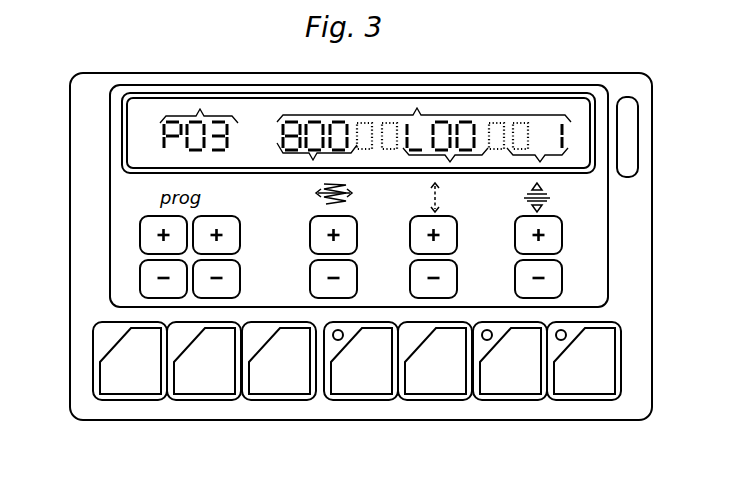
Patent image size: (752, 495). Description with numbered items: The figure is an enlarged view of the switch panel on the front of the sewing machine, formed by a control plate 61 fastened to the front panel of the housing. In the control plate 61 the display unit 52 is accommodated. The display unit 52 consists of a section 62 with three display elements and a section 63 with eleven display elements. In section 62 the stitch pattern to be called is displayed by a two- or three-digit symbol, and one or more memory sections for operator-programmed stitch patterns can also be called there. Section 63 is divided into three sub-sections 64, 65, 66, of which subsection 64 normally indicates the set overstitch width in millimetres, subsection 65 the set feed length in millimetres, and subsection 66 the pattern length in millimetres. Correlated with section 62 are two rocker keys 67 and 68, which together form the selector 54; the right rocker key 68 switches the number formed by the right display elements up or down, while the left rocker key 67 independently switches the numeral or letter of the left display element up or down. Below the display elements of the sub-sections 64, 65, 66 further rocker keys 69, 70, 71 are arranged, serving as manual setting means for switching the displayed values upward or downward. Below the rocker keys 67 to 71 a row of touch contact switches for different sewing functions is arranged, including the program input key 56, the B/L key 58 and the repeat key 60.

The display unit 52 is at (553, 108).
The selector 54 is at (122, 272).
The program input key 56 is at (142, 382).
The B/L key 58 is at (213, 377).
The repeat key 60 is at (287, 378).
The control plate 61 is at (633, 242).
The section with three display elements 62 is at (200, 109).
The section with eleven display elements 63 is at (434, 126).
The subsection 64 is at (313, 160).
The subsection 65 is at (450, 162).
The subsection 66 is at (540, 162).
The rocker key 67 is at (140, 233).
The rocker key 68 is at (233, 244).
The rocker key 69 is at (347, 258).
The rocker key 70 is at (444, 240).
The rocker key 71 is at (553, 258).